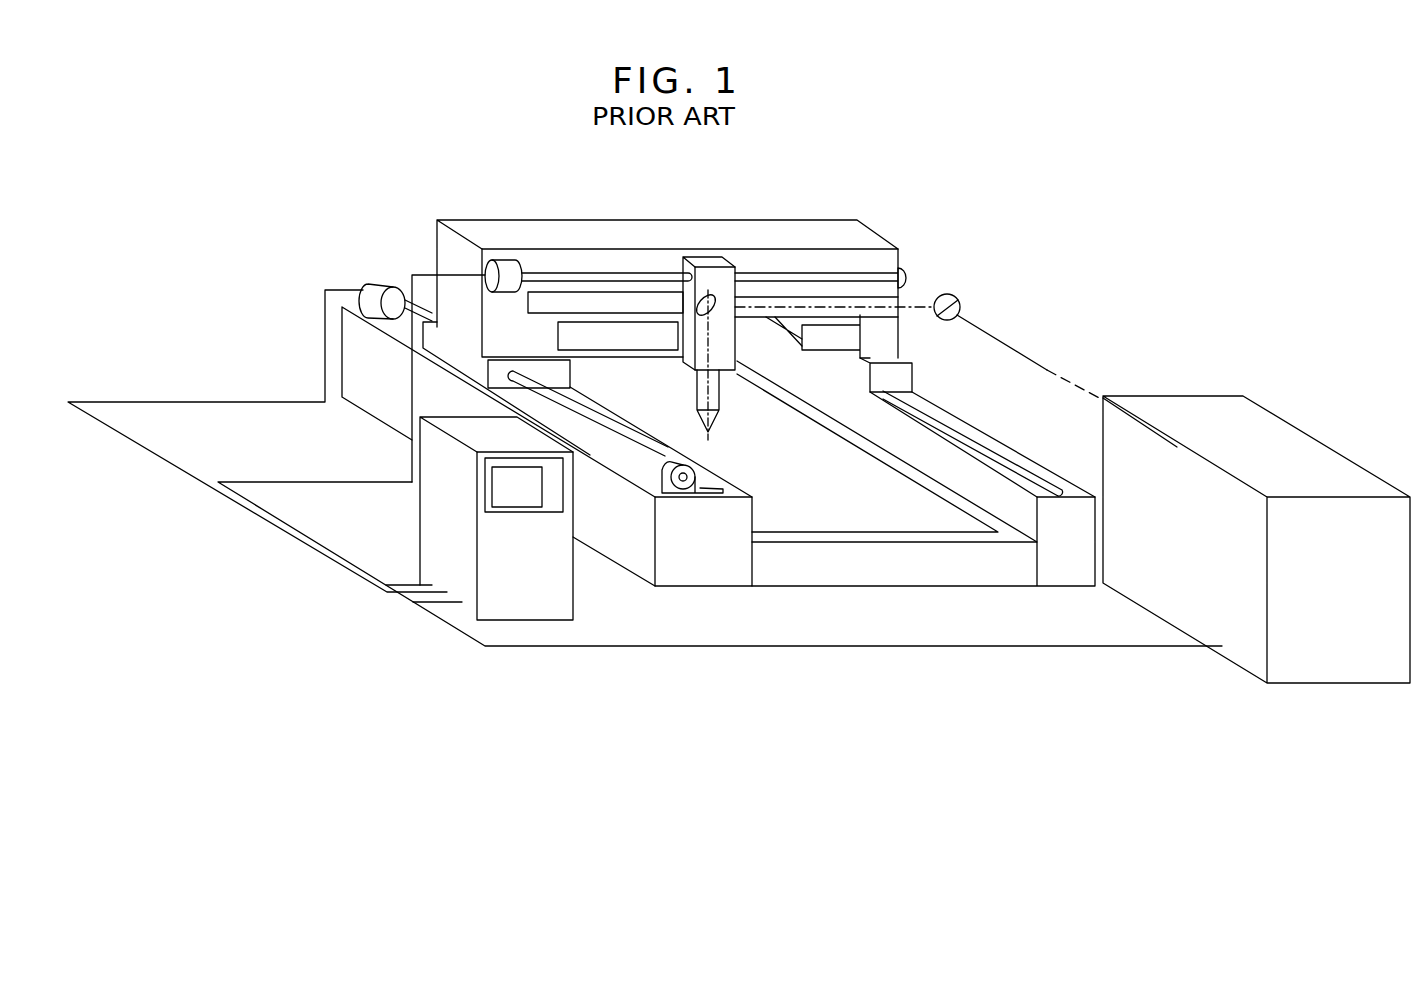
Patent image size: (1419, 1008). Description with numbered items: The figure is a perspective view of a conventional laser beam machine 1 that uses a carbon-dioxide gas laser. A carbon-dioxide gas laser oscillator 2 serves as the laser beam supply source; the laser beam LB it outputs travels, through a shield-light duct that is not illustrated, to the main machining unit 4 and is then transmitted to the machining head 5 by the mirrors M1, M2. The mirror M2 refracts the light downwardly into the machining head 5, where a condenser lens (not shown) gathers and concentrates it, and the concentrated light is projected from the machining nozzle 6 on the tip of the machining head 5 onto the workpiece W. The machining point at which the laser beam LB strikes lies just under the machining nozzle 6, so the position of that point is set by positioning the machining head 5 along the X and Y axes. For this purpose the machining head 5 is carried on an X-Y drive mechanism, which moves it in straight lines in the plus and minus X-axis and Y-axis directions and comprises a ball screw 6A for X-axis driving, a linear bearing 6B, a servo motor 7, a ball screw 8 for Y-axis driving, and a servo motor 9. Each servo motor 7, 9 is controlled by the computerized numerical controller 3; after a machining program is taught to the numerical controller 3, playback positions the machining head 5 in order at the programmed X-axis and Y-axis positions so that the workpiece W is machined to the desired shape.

The laser beam machine 1 is at (905, 181).
The carbon-dioxide gas laser oscillator 2 is at (1212, 415).
The numerical controller 3 is at (505, 593).
The main machining unit 4 is at (1085, 717).
The machining head 5 is at (672, 332).
The machining nozzle 6 is at (697, 400).
The ball screw for X-axis driving 6A is at (643, 458).
The linear bearing 6B is at (963, 420).
The servo motor 7 is at (373, 280).
The ball screw for Y-axis driving 8 is at (650, 275).
The servo motor 9 is at (518, 262).
The mirror M1 is at (950, 297).
The mirror M2 is at (712, 282).
The workpiece W is at (887, 515).
The laser beam LB is at (718, 397).